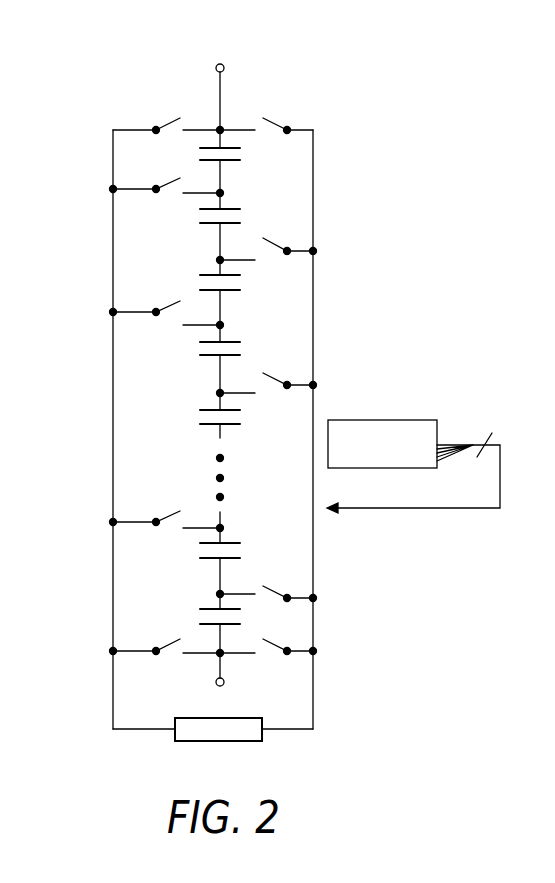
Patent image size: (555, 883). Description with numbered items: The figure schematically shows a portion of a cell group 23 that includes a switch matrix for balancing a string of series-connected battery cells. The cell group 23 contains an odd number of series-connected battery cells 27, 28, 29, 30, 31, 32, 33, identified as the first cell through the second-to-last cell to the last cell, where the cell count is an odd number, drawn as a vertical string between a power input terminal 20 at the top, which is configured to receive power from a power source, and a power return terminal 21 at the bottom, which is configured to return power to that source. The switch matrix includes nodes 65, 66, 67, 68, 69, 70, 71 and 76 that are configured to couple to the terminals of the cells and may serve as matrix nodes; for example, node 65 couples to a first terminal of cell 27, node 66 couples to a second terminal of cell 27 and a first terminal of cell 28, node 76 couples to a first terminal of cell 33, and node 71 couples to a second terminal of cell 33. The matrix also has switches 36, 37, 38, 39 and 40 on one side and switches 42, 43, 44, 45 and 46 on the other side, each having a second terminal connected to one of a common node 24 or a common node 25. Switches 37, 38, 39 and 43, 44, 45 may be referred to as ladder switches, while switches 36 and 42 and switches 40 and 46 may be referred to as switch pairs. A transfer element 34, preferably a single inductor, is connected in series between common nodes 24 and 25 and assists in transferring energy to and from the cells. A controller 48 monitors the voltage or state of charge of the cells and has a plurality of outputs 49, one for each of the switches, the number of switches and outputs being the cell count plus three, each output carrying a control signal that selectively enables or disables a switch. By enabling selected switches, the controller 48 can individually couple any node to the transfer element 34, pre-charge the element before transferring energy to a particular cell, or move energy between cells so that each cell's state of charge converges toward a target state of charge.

The power input terminal 20 is at (218, 64).
The power return terminal 21 is at (224, 686).
The cell group 23 is at (130, 57).
The common node 24 is at (112, 398).
The common node 25 is at (314, 320).
The battery cell 27 is at (232, 152).
The battery cell 28 is at (232, 218).
The battery cell 29 is at (232, 283).
The battery cell 30 is at (232, 349).
The battery cell 31 is at (232, 416).
The battery cell 32 is at (233, 553).
The battery cell 33 is at (232, 617).
The transfer element 34 is at (235, 742).
The switch 36 is at (163, 123).
The ladder switch 37 is at (163, 183).
The ladder switch 38 is at (163, 306).
The ladder switch 39 is at (163, 516).
The switch 40 is at (163, 645).
The switch 42 is at (278, 124).
The ladder switch 43 is at (275, 244).
The ladder switch 44 is at (275, 379).
The ladder switch 45 is at (275, 591).
The switch 46 is at (275, 644).
The controller 48 is at (403, 419).
The outputs 49 is at (500, 460).
The node 65 is at (223, 127).
The node 66 is at (218, 190).
The node 67 is at (218, 257).
The node 68 is at (218, 322).
The node 69 is at (218, 390).
The node 70 is at (218, 525).
The node 71 is at (218, 591).
The node 76 is at (217, 657).